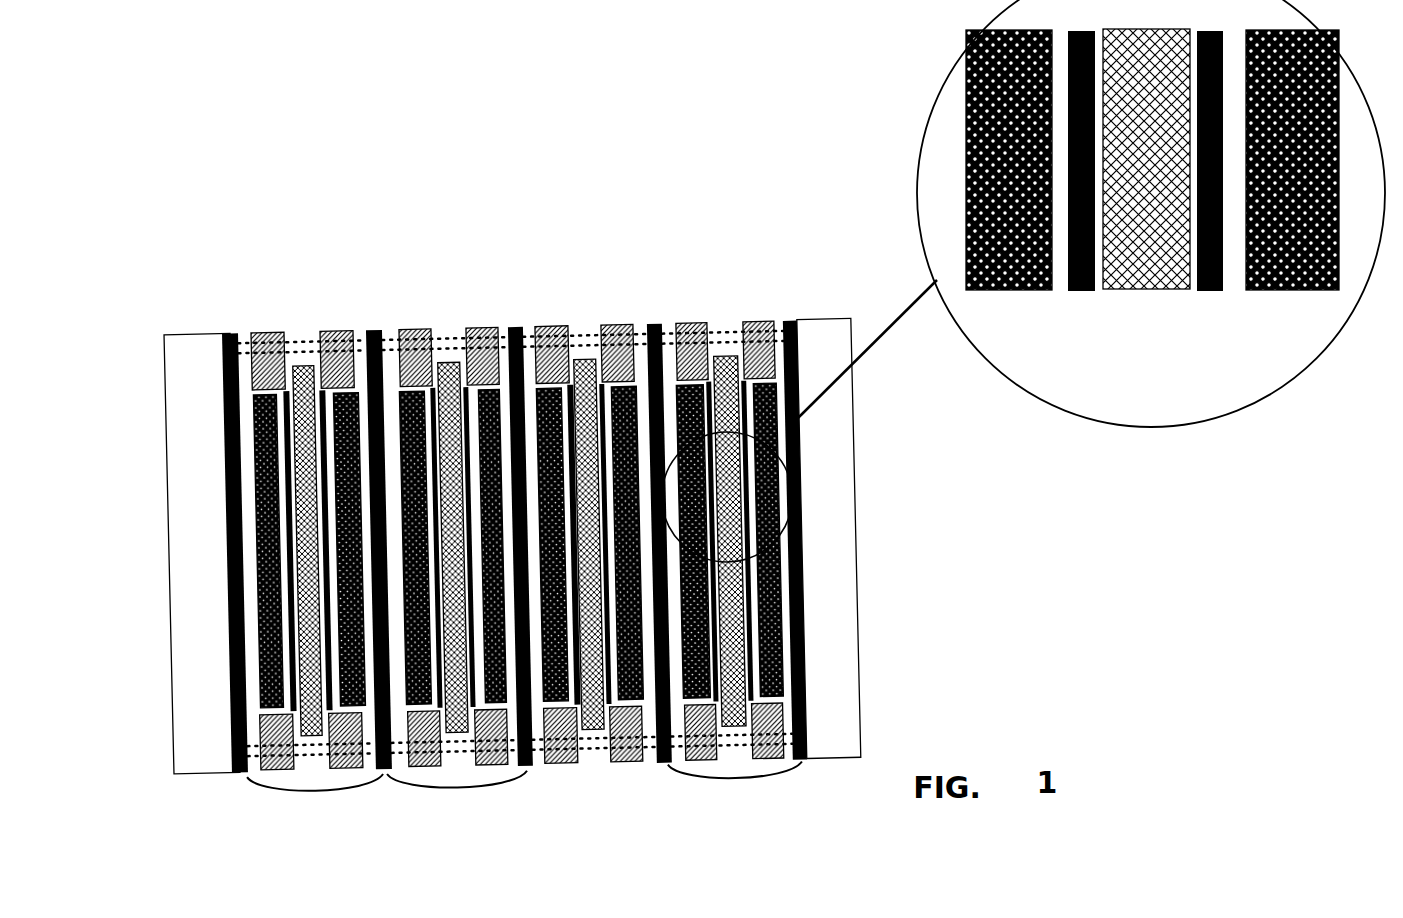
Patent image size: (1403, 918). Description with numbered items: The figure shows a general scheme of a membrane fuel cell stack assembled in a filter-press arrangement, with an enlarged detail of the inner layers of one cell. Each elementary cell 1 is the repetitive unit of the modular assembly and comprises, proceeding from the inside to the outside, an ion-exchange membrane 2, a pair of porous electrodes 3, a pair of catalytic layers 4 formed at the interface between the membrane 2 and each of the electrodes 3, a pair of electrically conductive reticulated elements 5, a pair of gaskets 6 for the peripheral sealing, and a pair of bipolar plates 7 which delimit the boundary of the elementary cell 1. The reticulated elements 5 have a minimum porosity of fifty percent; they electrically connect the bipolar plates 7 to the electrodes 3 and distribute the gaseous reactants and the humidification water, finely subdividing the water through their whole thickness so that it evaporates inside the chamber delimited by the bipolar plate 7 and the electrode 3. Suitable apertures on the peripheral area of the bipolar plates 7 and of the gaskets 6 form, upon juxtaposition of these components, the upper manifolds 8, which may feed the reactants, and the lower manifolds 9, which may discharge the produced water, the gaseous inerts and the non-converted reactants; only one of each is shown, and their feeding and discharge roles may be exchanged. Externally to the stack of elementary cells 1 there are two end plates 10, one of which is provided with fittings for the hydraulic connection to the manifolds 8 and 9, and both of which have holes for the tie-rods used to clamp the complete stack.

The elementary cell 1 is at (525, 796).
The ion-exchange membrane 2 is at (304, 369).
The porous electrodes 3 is at (1086, 291).
The catalytic layers 4 is at (1106, 265).
The electrically conductive reticulated elements 5 is at (1006, 292).
The gaskets 6 is at (265, 335).
The bipolar plates 7 is at (228, 334).
The upper manifolds 8 is at (530, 351).
The lower manifolds 9 is at (533, 752).
The end plates 10 is at (189, 419).